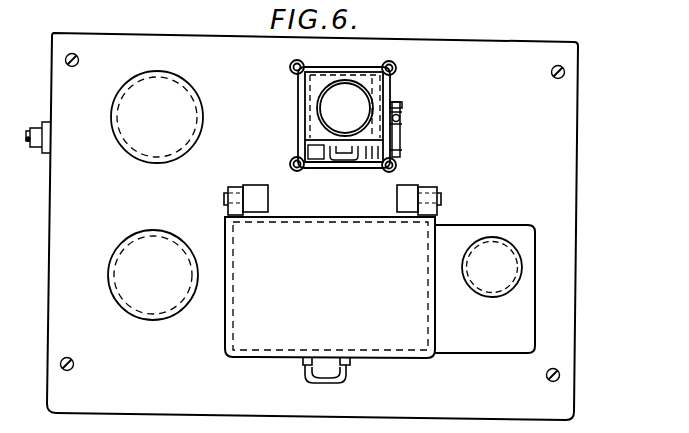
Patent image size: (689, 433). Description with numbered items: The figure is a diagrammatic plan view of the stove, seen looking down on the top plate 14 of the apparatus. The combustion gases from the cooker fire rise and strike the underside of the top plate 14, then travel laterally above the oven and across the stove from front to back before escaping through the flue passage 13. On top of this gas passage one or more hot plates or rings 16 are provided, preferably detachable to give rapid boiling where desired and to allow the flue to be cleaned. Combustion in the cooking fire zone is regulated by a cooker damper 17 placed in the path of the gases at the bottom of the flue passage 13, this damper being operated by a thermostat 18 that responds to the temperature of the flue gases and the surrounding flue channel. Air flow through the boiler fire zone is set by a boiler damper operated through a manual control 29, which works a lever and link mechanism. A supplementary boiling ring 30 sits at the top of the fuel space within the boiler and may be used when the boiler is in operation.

The flue passage 13 is at (320, 88).
The top plate 14 is at (488, 337).
The hot plate 16 is at (490, 258).
The cooker damper 17 is at (372, 108).
The thermostat 18 is at (402, 117).
The manual control 29 is at (206, 413).
The supplementary boiling ring 30 is at (157, 117).